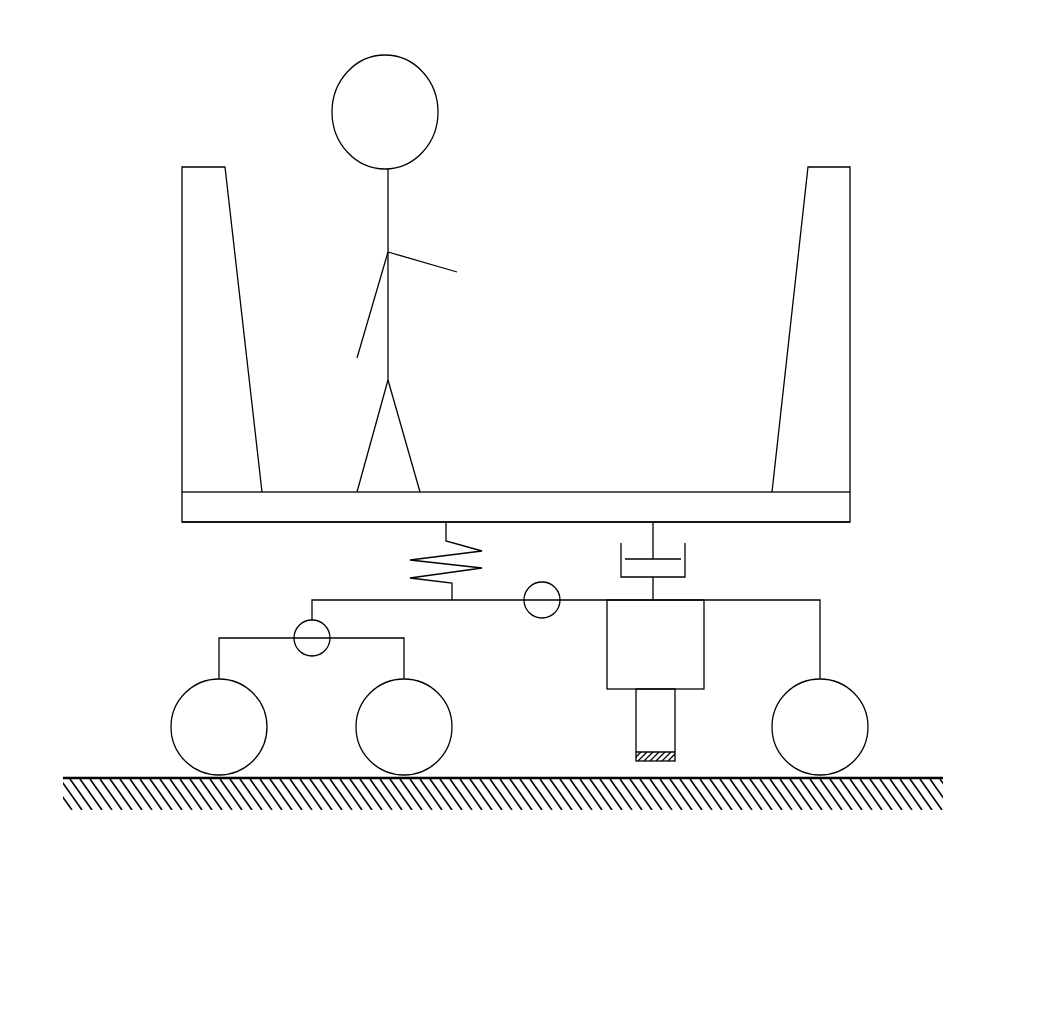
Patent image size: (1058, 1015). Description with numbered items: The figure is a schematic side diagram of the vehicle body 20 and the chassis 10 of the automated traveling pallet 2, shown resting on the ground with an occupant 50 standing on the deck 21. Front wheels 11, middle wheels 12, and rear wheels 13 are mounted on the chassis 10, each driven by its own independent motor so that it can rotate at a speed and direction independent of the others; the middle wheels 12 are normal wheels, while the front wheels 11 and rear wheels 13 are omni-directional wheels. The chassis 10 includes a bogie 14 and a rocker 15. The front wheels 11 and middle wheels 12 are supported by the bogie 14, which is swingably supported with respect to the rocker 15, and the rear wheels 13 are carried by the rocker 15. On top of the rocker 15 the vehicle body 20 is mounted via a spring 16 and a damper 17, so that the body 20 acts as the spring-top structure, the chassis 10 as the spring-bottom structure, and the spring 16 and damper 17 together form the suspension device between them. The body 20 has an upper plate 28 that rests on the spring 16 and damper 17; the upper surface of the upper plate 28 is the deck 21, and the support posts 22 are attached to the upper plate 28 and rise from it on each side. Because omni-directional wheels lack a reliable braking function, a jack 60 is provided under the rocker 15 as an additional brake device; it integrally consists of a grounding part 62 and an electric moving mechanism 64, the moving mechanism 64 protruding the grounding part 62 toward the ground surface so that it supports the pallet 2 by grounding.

The automated traveling pallet 2 is at (180, 128).
The chassis 10 is at (165, 612).
The front wheels 11 is at (171, 728).
The middle wheels 12 is at (453, 732).
The rear wheels 13 is at (870, 732).
The bogie 14 is at (262, 636).
The rocker 15 is at (805, 598).
The spring 16 is at (418, 562).
The damper 17 is at (690, 550).
The vehicle body 20 is at (145, 450).
The deck 21 is at (460, 492).
The support posts 22 is at (182, 373).
The upper plate 28 is at (850, 505).
The occupant 50 is at (346, 76).
The jack 60 is at (590, 675).
The grounding part 62 is at (662, 737).
The moving mechanism 64 is at (688, 662).